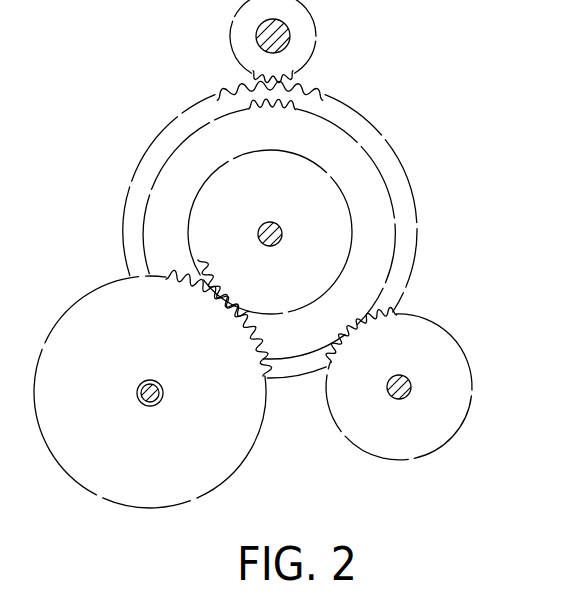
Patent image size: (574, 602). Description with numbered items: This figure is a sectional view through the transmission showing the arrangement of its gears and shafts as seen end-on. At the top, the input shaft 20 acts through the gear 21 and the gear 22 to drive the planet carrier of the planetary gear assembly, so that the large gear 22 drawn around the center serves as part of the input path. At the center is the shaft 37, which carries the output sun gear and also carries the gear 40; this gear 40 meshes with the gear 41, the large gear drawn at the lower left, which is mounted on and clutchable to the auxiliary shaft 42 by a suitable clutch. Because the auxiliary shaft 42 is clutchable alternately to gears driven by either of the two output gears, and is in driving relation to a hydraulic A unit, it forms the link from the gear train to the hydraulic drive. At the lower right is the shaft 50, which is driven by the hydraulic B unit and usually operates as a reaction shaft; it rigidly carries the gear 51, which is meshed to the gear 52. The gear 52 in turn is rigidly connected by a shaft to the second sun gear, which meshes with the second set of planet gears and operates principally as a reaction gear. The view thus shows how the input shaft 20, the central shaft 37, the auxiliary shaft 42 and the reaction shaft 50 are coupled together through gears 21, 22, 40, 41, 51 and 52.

The input shaft 20 is at (258, 32).
The gear 21 is at (305, 52).
The gear 22 is at (322, 98).
The shaft 37 is at (283, 233).
The gear 40 is at (308, 290).
The gear 41 is at (218, 470).
The auxiliary shaft 42 is at (160, 390).
The shaft 50 is at (410, 387).
The gear 51 is at (439, 343).
The gear 52 is at (391, 254).